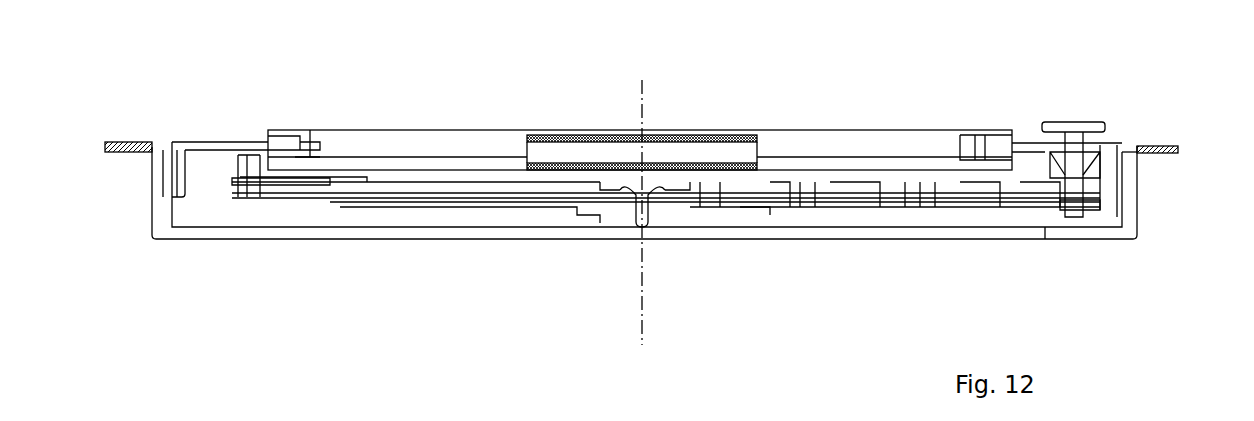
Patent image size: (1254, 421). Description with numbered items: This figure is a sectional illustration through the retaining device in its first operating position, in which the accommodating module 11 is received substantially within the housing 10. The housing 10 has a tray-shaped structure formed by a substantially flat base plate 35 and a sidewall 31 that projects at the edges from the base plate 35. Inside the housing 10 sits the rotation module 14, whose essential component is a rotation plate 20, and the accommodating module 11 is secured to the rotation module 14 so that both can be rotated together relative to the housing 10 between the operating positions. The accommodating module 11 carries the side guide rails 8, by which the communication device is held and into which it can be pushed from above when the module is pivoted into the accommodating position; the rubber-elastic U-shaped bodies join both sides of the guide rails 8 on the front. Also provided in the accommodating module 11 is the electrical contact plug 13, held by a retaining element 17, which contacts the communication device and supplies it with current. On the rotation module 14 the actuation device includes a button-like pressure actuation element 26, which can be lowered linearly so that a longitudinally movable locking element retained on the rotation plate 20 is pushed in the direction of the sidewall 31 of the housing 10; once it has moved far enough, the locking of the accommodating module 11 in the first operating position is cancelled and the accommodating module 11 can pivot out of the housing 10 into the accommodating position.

The guide rail 8 is at (715, 150).
The housing 10 is at (152, 134).
The accommodating module 11 is at (562, 92).
The electrical contact plug 13 is at (275, 148).
The rotation module 14 is at (1015, 97).
The retaining element 17 is at (287, 167).
The rotation plate 20 is at (340, 190).
The actuation element 26 is at (1075, 143).
The sidewall 31 is at (1135, 178).
The base plate 35 is at (1038, 237).